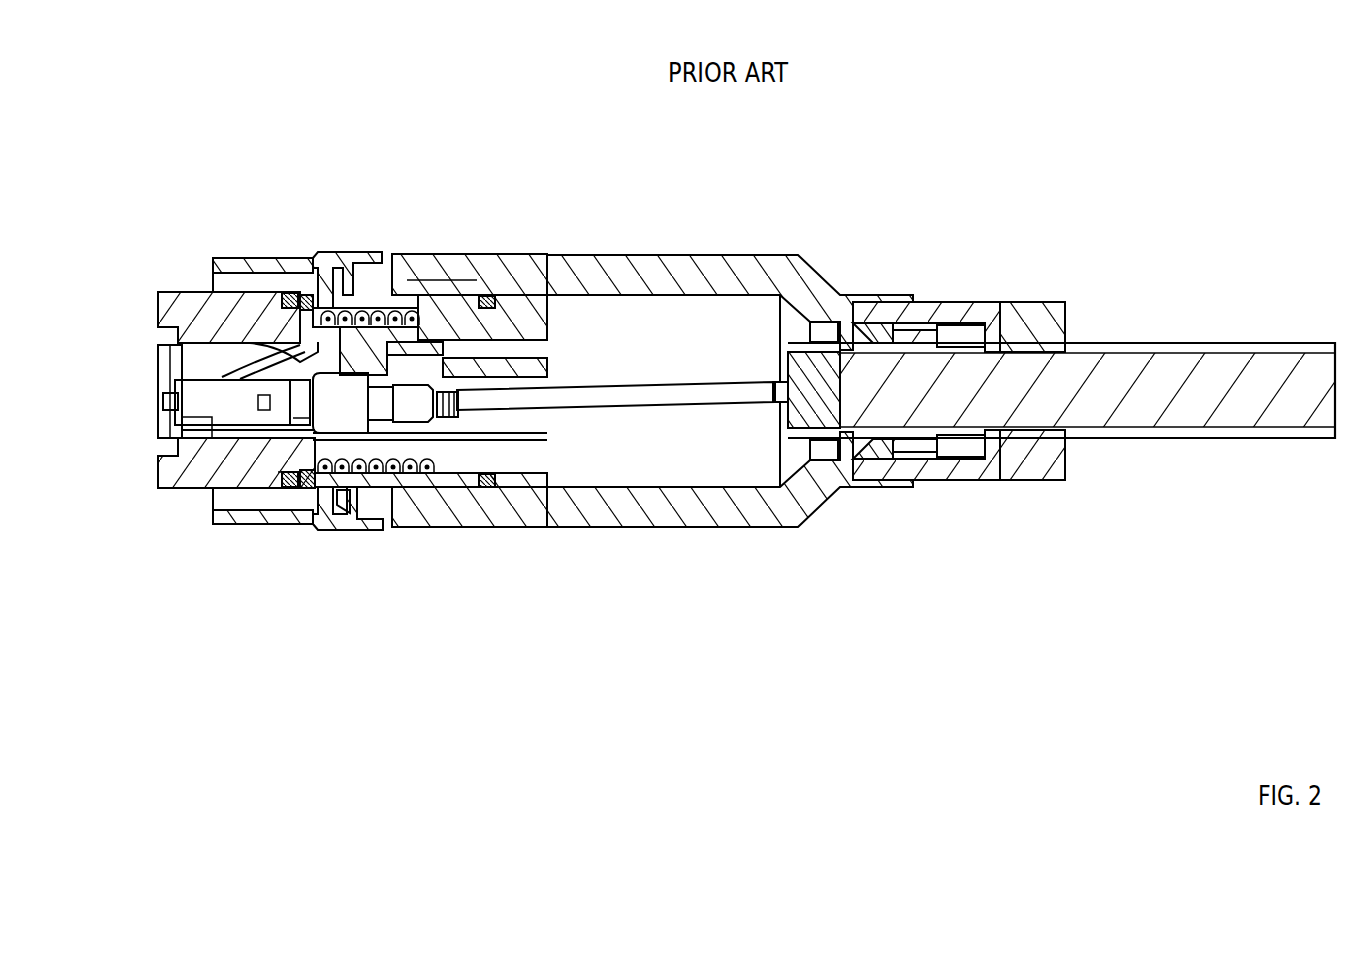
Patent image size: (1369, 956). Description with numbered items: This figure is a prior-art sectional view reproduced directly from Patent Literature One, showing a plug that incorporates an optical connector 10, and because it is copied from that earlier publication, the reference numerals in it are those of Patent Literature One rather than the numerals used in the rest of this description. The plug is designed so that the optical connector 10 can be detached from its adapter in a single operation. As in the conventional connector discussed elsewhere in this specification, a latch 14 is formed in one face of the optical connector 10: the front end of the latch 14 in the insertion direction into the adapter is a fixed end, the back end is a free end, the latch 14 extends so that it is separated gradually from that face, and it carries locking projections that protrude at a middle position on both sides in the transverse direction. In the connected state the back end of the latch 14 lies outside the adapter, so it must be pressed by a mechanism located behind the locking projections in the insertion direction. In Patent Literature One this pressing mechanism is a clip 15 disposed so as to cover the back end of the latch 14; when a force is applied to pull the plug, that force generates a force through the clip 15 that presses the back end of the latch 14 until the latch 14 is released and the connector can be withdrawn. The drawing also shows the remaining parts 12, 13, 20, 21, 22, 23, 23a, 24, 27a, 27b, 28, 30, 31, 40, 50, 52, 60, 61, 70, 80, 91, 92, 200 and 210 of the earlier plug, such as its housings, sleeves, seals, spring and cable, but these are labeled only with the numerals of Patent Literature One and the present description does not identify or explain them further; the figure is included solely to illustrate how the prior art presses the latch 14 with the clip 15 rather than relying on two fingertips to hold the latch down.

The optical connector 10 is at (412, 300).
The ferrule 12 is at (212, 427).
The stopper 13 is at (163, 398).
The latch 14 is at (272, 352).
The clip 15 is at (345, 370).
The adapter body 20 is at (172, 290).
The inner sleeve 21 is at (205, 428).
The end flange 22 is at (185, 448).
The sleeve 23 is at (312, 300).
The sleeve flange 23a is at (290, 340).
The cylinder 24 is at (262, 352).
The seal groove 27a is at (286, 474).
The seal groove 27b is at (505, 473).
The frame bottom 28 is at (340, 530).
The plug frame 30 is at (310, 252).
The latch 31 is at (350, 510).
The coil spring 40 is at (410, 475).
The front housing 50 is at (560, 290).
The O-ring 52 is at (487, 296).
The rear housing 60 is at (700, 530).
The cable holder 61 is at (900, 462).
The boot 70 is at (985, 485).
The nut 80 is at (1035, 300).
The O-ring 91 is at (292, 489).
The O-ring 92 is at (487, 488).
The optical cable 200 is at (1225, 343).
The optical fiber 210 is at (657, 385).